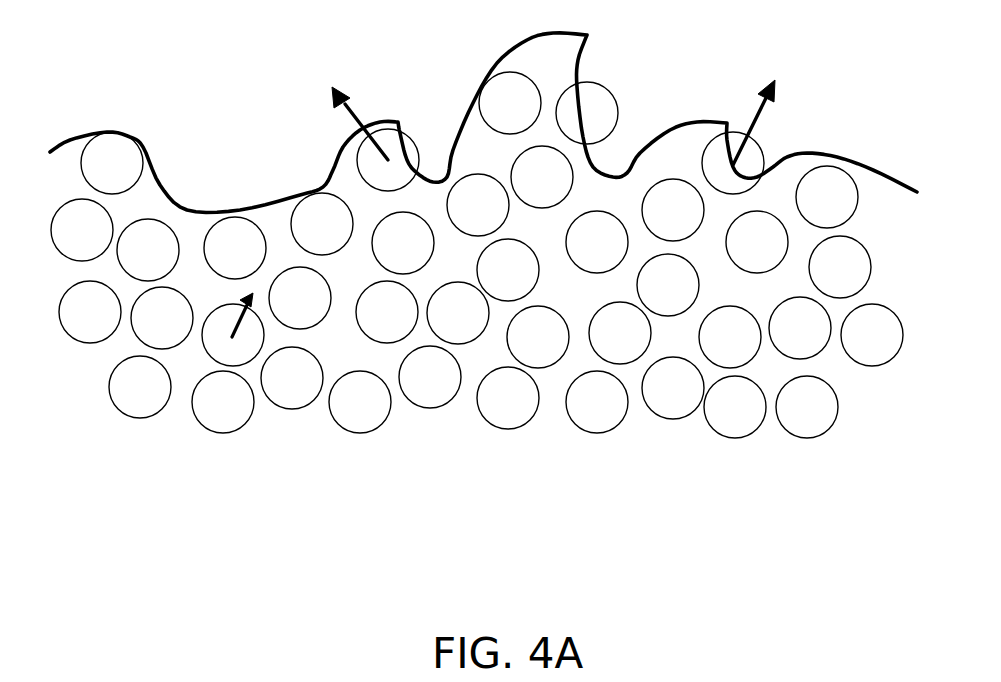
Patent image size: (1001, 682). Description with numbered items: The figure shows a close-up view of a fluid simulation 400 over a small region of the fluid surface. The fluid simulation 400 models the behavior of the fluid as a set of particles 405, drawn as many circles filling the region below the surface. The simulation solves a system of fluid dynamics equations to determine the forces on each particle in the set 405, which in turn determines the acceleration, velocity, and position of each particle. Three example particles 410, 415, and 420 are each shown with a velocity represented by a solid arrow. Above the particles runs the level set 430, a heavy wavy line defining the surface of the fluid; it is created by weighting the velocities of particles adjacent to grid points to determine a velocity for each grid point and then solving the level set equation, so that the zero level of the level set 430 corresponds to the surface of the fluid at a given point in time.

The fluid simulation 400 is at (483, 119).
The set of particles 405 is at (917, 452).
The particle 410 is at (232, 303).
The particle 415 is at (417, 148).
The particle 420 is at (717, 153).
The level set 430 is at (143, 145).